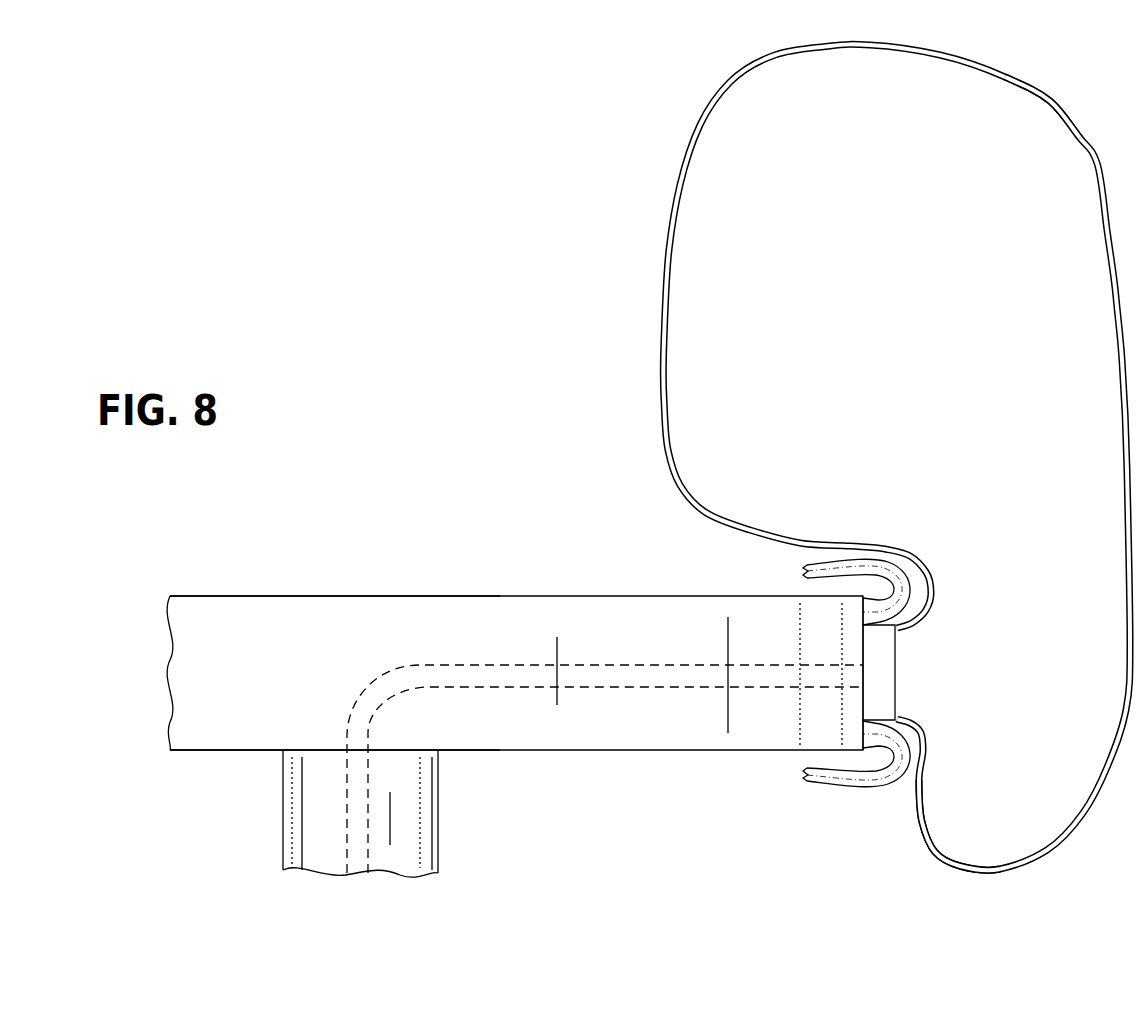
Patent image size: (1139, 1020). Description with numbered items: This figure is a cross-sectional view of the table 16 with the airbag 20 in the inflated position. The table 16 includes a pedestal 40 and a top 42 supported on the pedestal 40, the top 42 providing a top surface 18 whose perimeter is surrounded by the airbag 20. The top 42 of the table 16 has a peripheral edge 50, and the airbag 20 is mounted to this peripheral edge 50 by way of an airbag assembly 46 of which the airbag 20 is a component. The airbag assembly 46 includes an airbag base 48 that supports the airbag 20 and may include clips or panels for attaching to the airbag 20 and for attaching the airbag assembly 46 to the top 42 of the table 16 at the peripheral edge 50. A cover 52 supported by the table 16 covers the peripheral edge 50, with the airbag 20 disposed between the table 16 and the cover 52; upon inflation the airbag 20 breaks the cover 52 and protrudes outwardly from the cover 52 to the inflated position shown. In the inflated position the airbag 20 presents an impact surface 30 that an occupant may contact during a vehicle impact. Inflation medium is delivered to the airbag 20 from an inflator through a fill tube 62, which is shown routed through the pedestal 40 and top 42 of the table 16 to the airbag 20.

The table 16 is at (198, 775).
The top surface 18 is at (403, 596).
The airbag 20 is at (1090, 147).
The impact surface 30 is at (1051, 94).
The pedestal 40 is at (283, 849).
The top 42 is at (297, 569).
The airbag assembly 46 is at (904, 795).
The airbag base 48 is at (895, 684).
The peripheral edge 50 is at (863, 703).
The cover 52 is at (806, 571).
The fill tube 62 is at (372, 821).